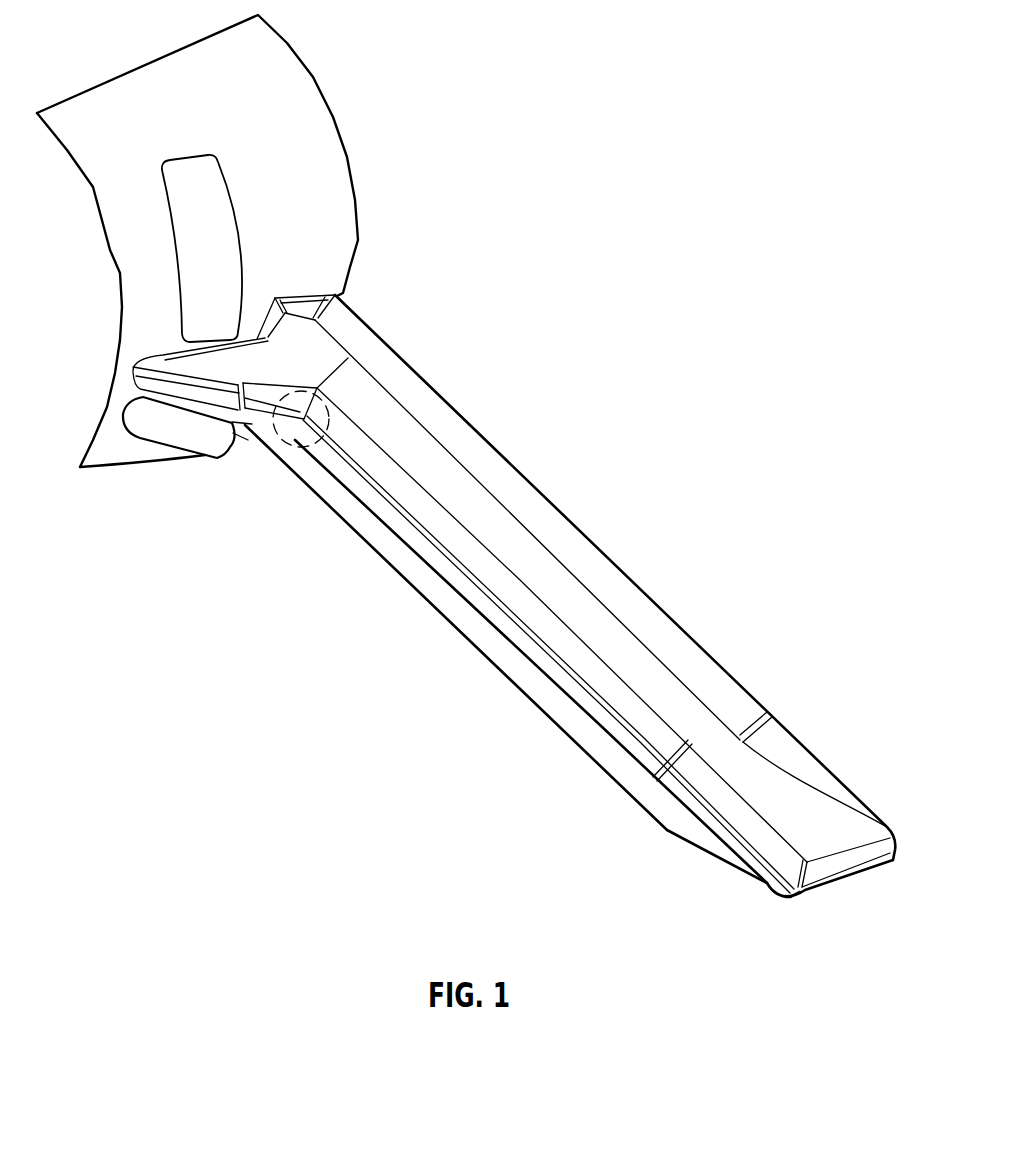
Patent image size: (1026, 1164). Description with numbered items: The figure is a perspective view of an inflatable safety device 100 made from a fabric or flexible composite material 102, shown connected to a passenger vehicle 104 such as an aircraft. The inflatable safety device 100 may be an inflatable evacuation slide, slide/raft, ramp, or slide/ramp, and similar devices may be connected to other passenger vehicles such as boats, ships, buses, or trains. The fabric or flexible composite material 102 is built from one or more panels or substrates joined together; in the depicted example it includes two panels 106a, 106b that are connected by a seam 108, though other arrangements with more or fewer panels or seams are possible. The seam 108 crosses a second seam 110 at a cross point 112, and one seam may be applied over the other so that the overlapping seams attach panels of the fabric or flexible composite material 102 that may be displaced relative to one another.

The inflatable safety device 100 is at (567, 92).
The fabric or flexible composite material 102 is at (463, 442).
The passenger vehicle 104 is at (283, 110).
The panel 106a is at (393, 485).
The panel 106b is at (430, 558).
The seam 108 is at (491, 602).
The seam 110 is at (325, 381).
The cross point 112 is at (299, 454).